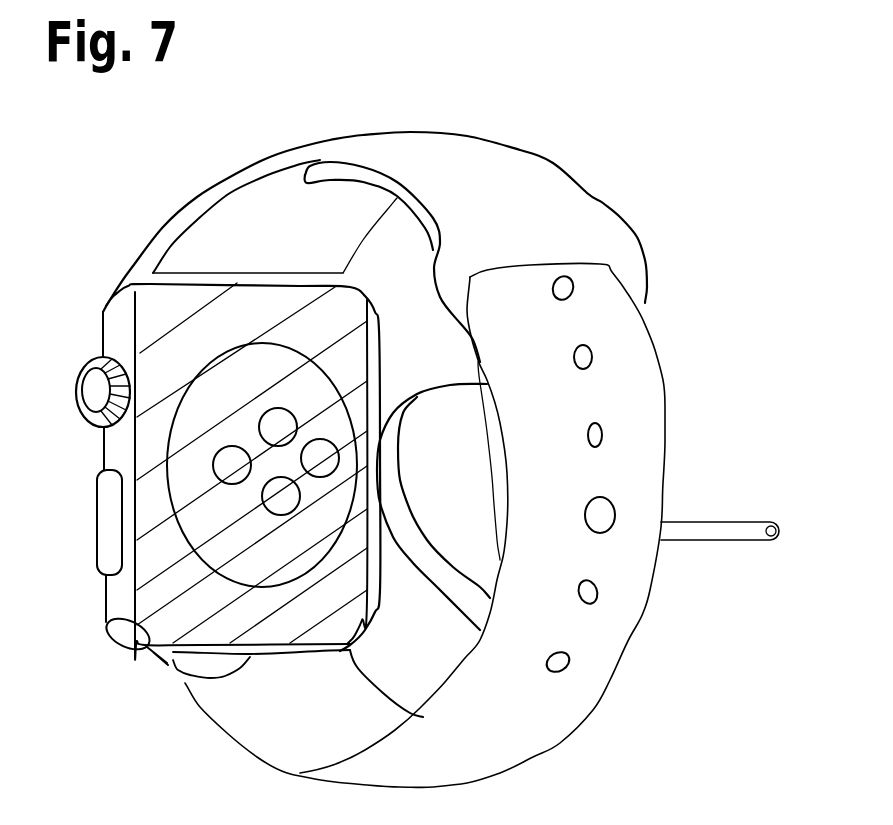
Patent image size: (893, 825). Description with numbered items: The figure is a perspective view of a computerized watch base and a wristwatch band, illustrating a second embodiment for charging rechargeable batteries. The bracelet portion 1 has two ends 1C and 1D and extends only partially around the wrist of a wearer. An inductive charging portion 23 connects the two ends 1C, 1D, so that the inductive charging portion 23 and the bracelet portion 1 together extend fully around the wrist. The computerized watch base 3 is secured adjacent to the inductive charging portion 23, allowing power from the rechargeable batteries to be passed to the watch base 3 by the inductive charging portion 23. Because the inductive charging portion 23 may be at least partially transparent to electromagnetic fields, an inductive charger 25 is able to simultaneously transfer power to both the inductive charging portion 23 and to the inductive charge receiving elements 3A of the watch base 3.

The bracelet portion 1 is at (250, 217).
The end of bracelet portion 1C is at (238, 276).
The end of bracelet portion 1D is at (200, 677).
The inductive charging portion 23 is at (177, 350).
The computerized watch base 3 is at (120, 448).
The inductive charge receiving elements 3A is at (302, 410).
The inductive charger 25 is at (457, 485).